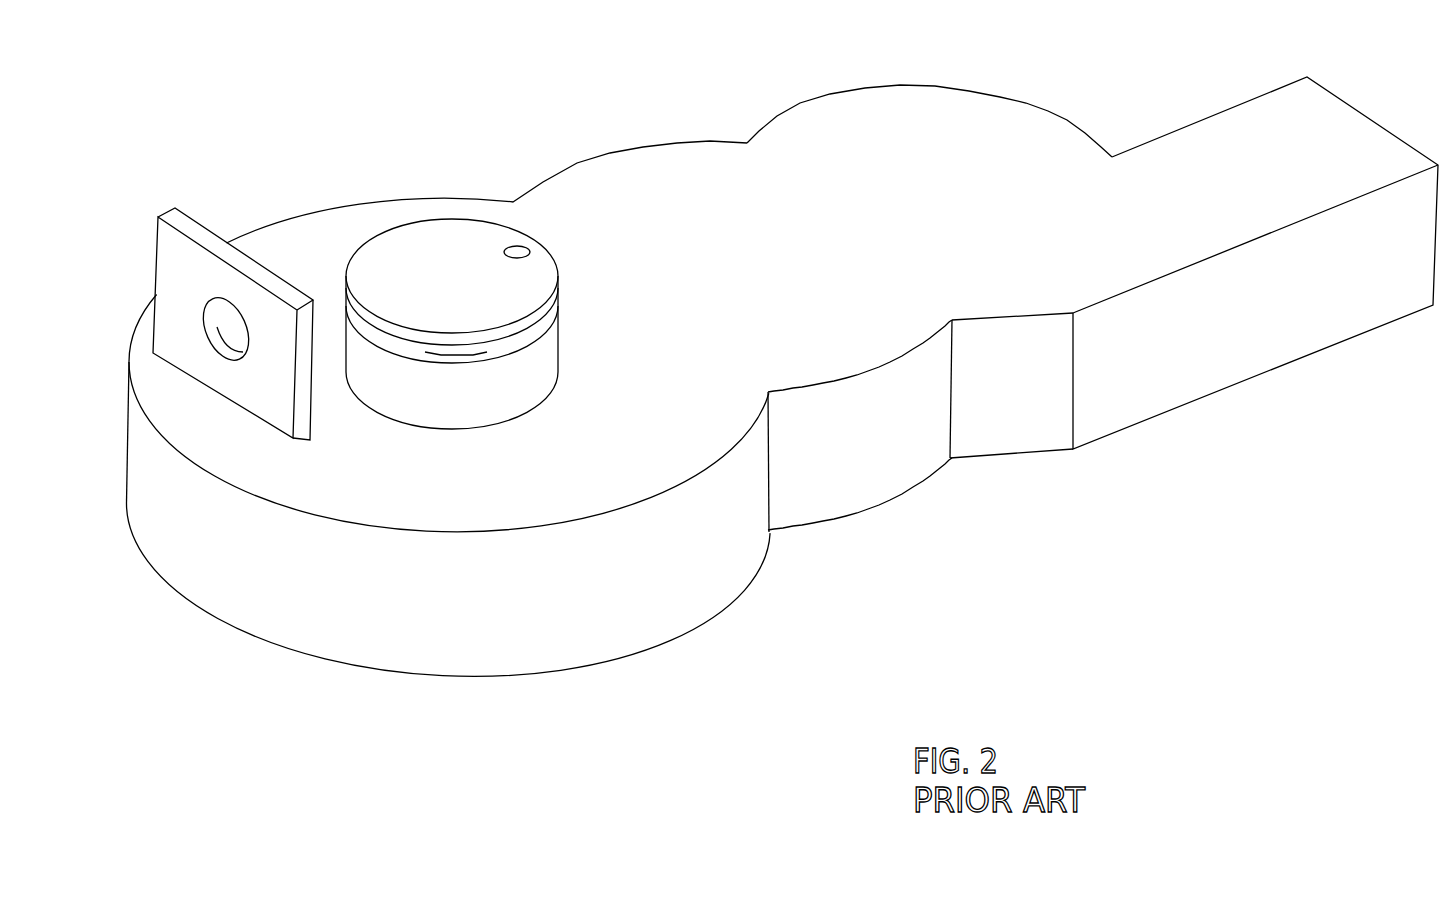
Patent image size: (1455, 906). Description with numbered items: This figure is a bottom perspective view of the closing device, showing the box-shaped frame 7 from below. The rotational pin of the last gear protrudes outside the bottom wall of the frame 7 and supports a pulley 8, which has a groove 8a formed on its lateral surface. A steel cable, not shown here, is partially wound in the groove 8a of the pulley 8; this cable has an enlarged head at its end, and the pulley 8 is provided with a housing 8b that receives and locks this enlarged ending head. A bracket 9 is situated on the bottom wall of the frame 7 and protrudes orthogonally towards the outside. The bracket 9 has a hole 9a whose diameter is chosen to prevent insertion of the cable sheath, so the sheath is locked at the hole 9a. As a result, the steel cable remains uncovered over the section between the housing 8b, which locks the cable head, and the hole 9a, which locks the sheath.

The box-shaped frame 7 is at (1005, 145).
The pulley 8 is at (520, 285).
The groove 8a is at (487, 352).
The housing 8b is at (517, 247).
The bracket 9 is at (212, 240).
The hole 9a is at (215, 330).